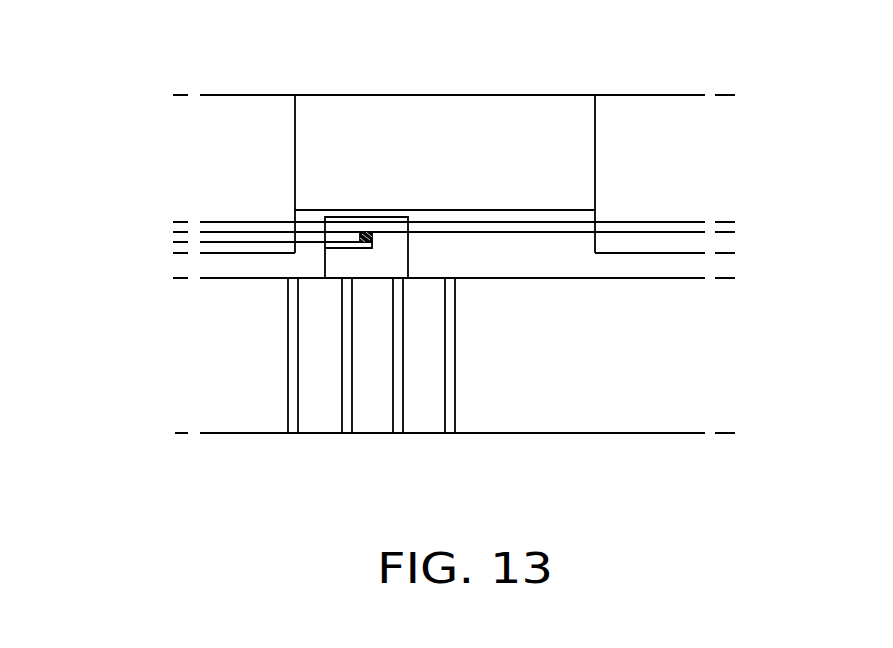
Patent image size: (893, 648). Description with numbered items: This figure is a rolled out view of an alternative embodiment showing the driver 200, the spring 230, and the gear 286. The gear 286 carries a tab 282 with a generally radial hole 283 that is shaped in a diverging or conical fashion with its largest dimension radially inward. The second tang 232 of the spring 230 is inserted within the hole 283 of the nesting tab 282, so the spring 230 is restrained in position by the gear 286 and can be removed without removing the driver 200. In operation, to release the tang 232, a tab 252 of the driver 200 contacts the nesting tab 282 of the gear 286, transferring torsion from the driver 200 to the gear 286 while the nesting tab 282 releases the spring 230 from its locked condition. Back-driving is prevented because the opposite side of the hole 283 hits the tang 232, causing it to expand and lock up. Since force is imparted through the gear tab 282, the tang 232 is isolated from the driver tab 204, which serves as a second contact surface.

The driver 200 is at (628, 143).
The spring 230 is at (206, 233).
The driver tab (second contact surface) 204 is at (295, 250).
The tab of the driver 252 is at (594, 243).
The second tang 232 is at (366, 233).
The radial hole 283 is at (372, 237).
The tab 282 is at (338, 265).
The gear 286 is at (517, 390).